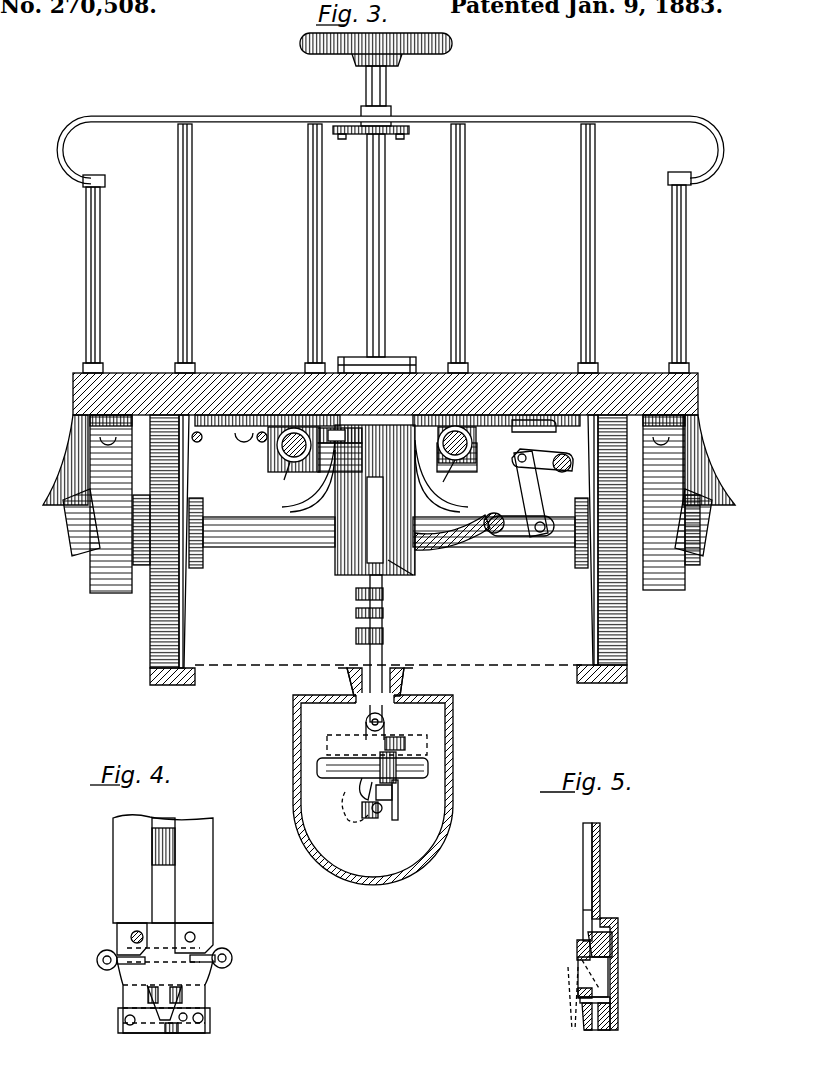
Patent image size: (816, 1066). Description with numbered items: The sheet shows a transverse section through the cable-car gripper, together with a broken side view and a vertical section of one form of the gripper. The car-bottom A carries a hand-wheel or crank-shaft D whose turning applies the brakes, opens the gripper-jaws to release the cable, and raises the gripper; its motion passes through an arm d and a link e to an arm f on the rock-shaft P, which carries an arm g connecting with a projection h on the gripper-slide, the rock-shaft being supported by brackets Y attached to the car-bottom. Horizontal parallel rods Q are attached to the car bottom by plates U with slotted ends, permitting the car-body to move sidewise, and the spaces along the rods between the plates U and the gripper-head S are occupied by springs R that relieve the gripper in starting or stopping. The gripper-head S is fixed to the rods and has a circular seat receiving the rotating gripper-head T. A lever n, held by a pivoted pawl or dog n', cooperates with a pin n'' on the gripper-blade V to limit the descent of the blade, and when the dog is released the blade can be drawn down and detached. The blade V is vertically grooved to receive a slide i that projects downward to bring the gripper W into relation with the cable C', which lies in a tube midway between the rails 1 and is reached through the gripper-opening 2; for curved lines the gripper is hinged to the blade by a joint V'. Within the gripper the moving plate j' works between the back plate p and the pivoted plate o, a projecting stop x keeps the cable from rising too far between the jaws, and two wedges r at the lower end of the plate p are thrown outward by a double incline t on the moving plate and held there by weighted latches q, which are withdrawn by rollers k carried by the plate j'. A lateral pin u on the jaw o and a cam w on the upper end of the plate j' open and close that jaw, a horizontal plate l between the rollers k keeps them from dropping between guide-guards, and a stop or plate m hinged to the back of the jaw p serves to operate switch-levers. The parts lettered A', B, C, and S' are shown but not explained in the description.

In FIG. 3, the car-bottom A is at (385, 389).
In FIG. 3, the skirt or apron of platform A' is at (384, 460).
In FIG. 3, the wheel B is at (190, 607).
In FIG. 3, the journal box C is at (387, 504).
In FIG. 3, the hand-wheel or crank-shaft D is at (383, 221).
In FIG. 3, the springs R is at (276, 452).
In FIG. 3, the horizontal parallel rods Q is at (365, 482).
In FIG. 3, the gripper-head S is at (375, 520).
In FIG. 3, the column cap S' is at (397, 450).
In FIG. 3, the rotating gripper-head T is at (375, 500).
In FIG. 3, the plates U is at (229, 440).
In FIG. 3, the gripper-blade V is at (390, 648).
In FIG. 4, the gripper-blade V is at (163, 869).
In FIG. 5, the gripper-blade V is at (604, 882).
In FIG. 3, the joint V' is at (357, 724).
In FIG. 3, the brackets Y is at (537, 431).
In FIG. 3, the arm d is at (542, 451).
In FIG. 3, the link e is at (531, 494).
In FIG. 3, the pivoted plate o is at (563, 472).
In FIG. 5, the pivoted plate o is at (580, 985).
In FIG. 3, the rock-shaft P is at (494, 534).
In FIG. 3, the arm f is at (520, 537).
In FIG. 3, the arm g is at (452, 543).
In FIG. 3, the projection h is at (413, 575).
In FIG. 3, the lever n is at (356, 642).
In FIG. 3, the pivoted pawl or dog n' is at (349, 597).
In FIG. 3, the pin or projection n'' is at (347, 619).
In FIG. 3, the rails 1 is at (195, 684).
In FIG. 3, the gripper-opening 2 is at (381, 668).
In FIG. 3, the stop or plate m is at (402, 737).
In FIG. 3, the rollers k is at (373, 759).
In FIG. 4, the rollers k is at (95, 950).
In FIG. 3, the weighted latches q is at (358, 781).
In FIG. 3, the gripper W is at (373, 789).
In FIG. 4, the gripper W is at (168, 1001).
In FIG. 5, the gripper W is at (597, 1043).
In FIG. 3, the back plate p is at (399, 806).
In FIG. 4, the back plate p is at (133, 995).
In FIG. 5, the back plate p is at (618, 963).
In FIG. 3, the cable C' is at (379, 827).
In FIG. 4, the slide i is at (163, 870).
In FIG. 4, the moving plate j' is at (165, 942).
In FIG. 5, the moving plate j' is at (623, 977).
In FIG. 4, the horizontal plate l is at (178, 996).
In FIG. 4, the wedges r is at (122, 1020).
In FIG. 5, the wedges r is at (588, 1019).
In FIG. 4, the double incline t is at (172, 1033).
In FIG. 5, the cam or inclined projection w is at (617, 950).
In FIG. 5, the lateral pin u is at (580, 997).
In FIG. 5, the projecting stop x is at (608, 1002).